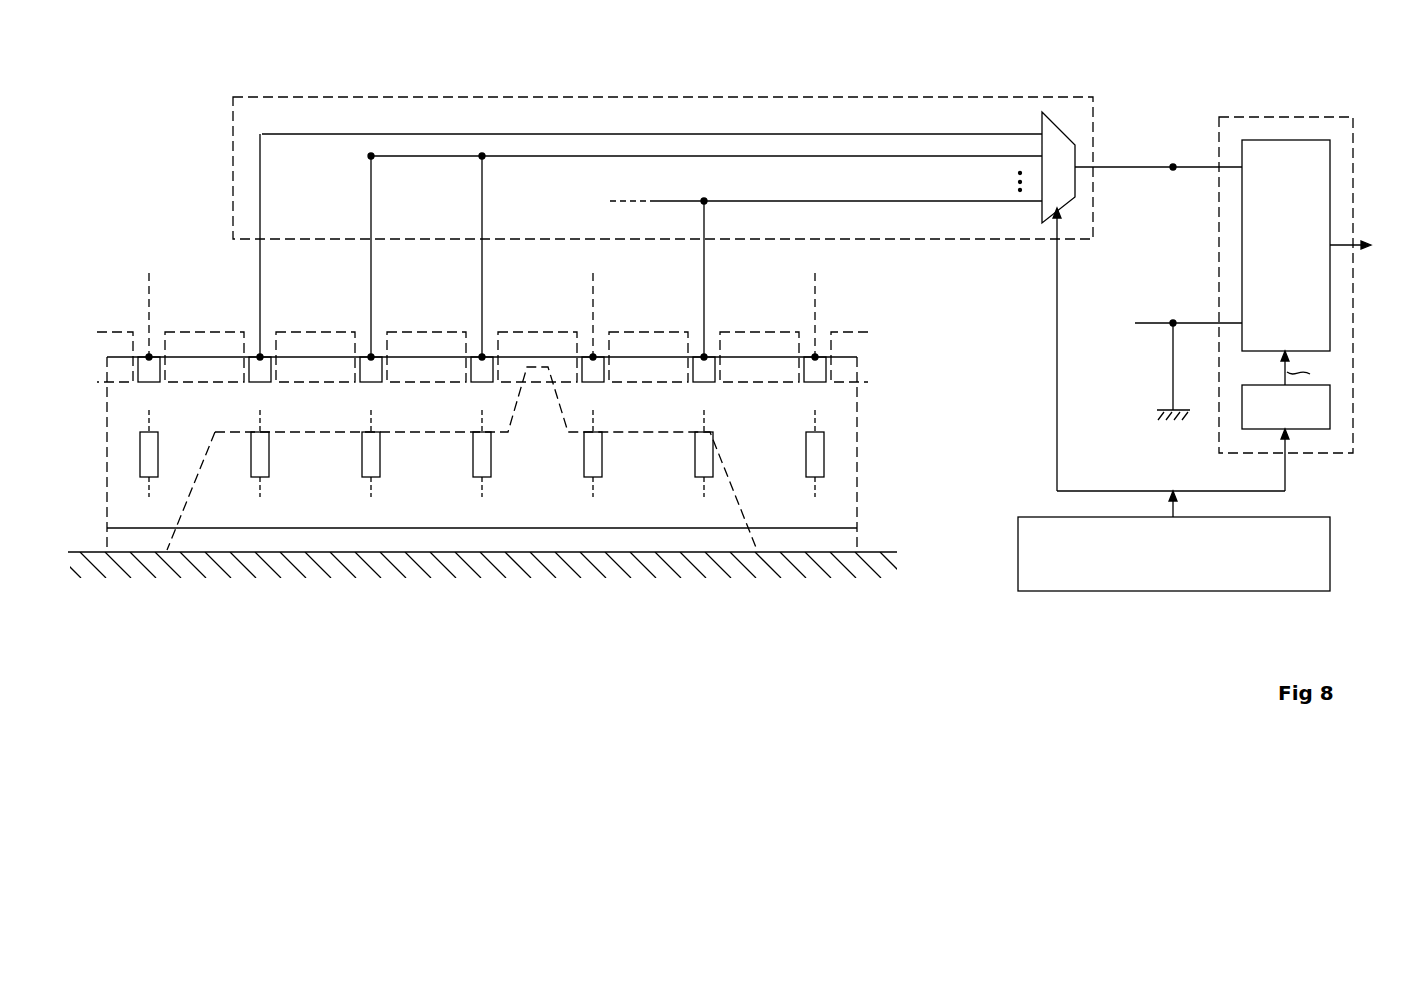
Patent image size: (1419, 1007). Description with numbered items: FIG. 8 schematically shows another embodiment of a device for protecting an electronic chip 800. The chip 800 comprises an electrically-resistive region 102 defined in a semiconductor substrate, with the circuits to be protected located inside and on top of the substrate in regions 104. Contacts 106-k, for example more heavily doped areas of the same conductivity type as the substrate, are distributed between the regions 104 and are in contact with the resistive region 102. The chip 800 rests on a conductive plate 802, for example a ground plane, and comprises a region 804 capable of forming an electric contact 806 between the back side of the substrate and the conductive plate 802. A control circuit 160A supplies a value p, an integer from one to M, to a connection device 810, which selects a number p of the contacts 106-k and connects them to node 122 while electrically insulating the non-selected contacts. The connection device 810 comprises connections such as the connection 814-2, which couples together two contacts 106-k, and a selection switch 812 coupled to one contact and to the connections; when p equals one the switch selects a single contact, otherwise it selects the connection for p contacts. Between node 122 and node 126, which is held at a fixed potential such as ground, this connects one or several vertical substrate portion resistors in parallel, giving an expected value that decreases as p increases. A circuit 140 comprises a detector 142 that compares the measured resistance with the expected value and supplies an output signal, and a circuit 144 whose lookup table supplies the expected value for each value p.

The electronic chip 800 is at (135, 588).
The conductive plate 802 is at (292, 575).
The region 804 is at (152, 542).
The electric contact 806 is at (130, 551).
The electrically-resistive region 102 is at (115, 412).
The regions 104 is at (199, 331).
The contacts 106-k is at (372, 356).
The connection device 810 is at (875, 97).
The selection switch 812 is at (1057, 120).
The connection 814-2 is at (425, 156).
The node 122 is at (1173, 167).
The node 126 is at (1173, 323).
The circuit 140 is at (1285, 117).
The detector 142 is at (1330, 172).
The circuit 144 is at (1330, 418).
The control circuit 160A is at (1305, 555).